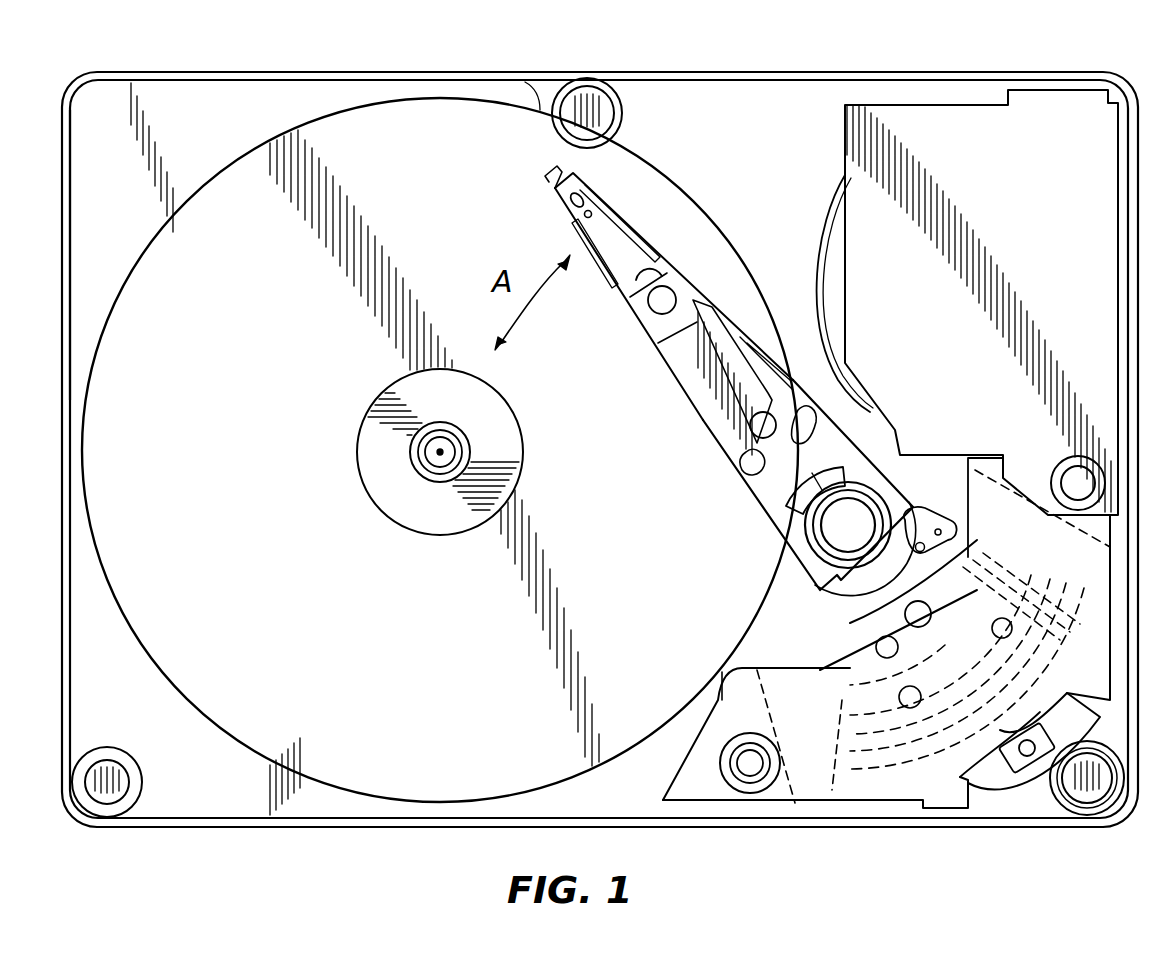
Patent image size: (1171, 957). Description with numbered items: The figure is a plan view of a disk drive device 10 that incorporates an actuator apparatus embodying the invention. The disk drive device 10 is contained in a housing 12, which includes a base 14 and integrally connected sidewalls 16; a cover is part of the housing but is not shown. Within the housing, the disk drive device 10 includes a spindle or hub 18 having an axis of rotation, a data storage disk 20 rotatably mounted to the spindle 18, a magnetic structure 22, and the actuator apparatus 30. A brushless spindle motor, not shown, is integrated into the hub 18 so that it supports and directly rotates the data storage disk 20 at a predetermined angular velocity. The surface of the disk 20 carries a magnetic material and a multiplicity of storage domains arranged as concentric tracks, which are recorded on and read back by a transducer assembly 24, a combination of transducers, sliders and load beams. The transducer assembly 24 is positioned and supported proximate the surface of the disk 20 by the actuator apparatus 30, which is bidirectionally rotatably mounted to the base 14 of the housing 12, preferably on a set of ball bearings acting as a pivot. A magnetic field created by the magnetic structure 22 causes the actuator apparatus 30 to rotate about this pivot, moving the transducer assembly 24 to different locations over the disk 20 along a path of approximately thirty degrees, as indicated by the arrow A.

The disk drive device 10 is at (1002, 834).
The housing 12 is at (756, 66).
The base 14 is at (760, 155).
The sidewalls 16 is at (106, 95).
The spindle or hub 18 is at (482, 440).
The data storage disk 20 is at (246, 330).
The magnetic structure 22 is at (800, 700).
The transducer assembly 24 is at (614, 216).
The actuator apparatus 30 is at (715, 490).